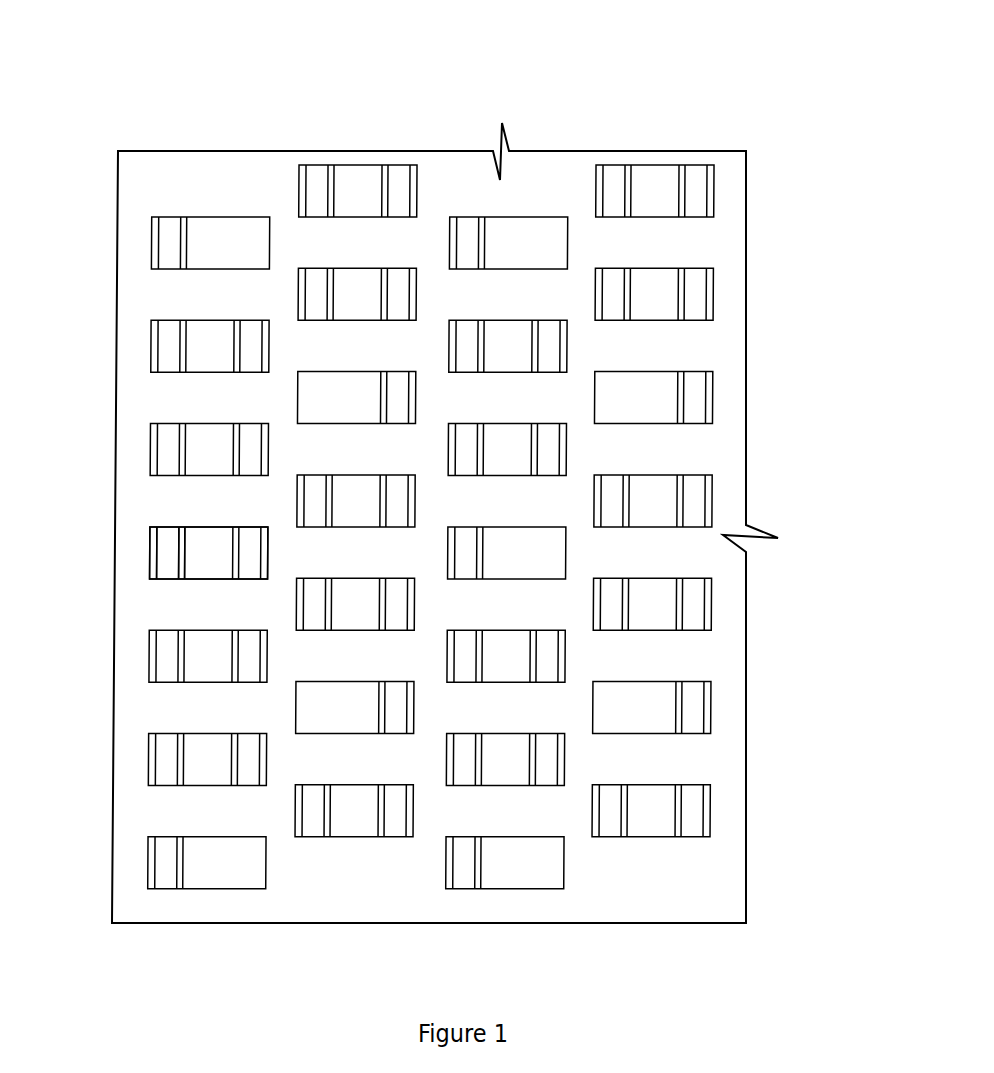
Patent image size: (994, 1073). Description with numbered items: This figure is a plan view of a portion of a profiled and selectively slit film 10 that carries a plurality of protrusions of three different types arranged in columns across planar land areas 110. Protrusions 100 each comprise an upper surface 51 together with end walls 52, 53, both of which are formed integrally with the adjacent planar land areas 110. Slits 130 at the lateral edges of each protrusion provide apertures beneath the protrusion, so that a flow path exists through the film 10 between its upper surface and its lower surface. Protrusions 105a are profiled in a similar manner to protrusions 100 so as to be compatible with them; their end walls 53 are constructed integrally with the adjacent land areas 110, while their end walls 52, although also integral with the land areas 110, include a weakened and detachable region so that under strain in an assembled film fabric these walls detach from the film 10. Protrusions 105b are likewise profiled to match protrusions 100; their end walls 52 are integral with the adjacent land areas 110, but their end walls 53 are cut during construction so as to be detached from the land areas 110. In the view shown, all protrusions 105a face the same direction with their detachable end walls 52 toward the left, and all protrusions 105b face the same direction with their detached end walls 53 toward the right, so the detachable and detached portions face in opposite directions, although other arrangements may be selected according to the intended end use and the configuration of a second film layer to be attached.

The film 10 is at (436, 485).
The protrusions 100 is at (356, 155).
The protrusions 105a is at (283, 390).
The protrusions 105b is at (205, 196).
The planar land areas 110 is at (150, 812).
The slits 130 is at (220, 525).
The upper surface 51 is at (381, 240).
The end walls 52 is at (318, 193).
The end walls 53 is at (403, 192).